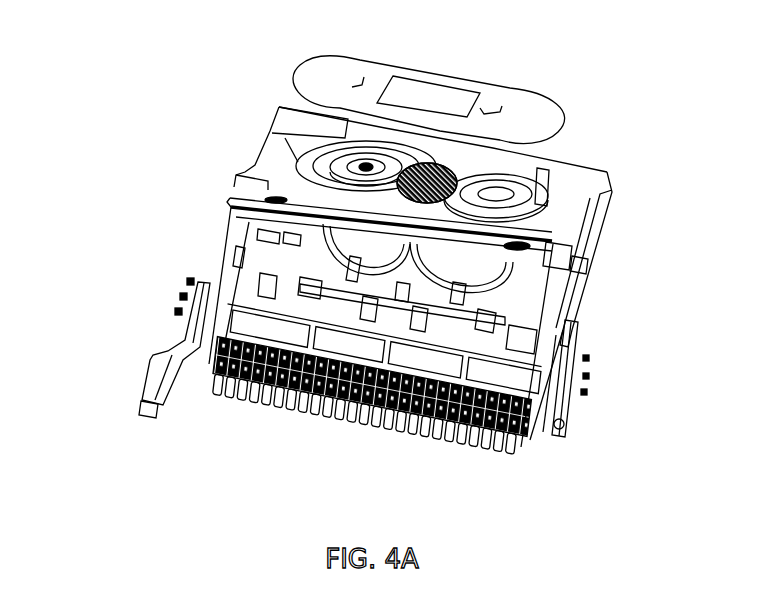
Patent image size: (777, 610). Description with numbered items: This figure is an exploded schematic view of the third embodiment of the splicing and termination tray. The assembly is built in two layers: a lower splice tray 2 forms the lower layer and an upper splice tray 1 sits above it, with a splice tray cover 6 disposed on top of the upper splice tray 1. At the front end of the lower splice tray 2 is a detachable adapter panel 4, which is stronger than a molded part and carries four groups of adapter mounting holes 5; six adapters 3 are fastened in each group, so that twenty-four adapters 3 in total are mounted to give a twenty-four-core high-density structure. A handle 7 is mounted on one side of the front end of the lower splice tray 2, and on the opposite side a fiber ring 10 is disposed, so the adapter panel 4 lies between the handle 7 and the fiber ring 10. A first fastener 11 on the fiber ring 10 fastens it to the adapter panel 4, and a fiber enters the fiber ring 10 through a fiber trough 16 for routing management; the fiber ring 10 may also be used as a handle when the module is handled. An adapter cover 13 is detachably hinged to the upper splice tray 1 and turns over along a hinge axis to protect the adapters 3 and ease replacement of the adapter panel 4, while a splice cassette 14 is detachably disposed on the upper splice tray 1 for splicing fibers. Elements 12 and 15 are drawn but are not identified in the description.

The upper splice tray 1 is at (290, 143).
The lower splice tray 2 is at (258, 242).
The adapters 3 is at (333, 412).
The adapter panel 4 is at (208, 366).
The adapter mounting hole 5 is at (260, 402).
The splice tray cover 6 is at (377, 80).
The handle 7 is at (558, 432).
The fiber ring 10 is at (188, 338).
The first fastener 11 is at (176, 291).
The right tabs 12 is at (597, 374).
The adapter cover 13 is at (552, 261).
The splice cassette 14 is at (437, 180).
The cover plate 15 is at (427, 90).
The fiber trough 16 is at (145, 417).